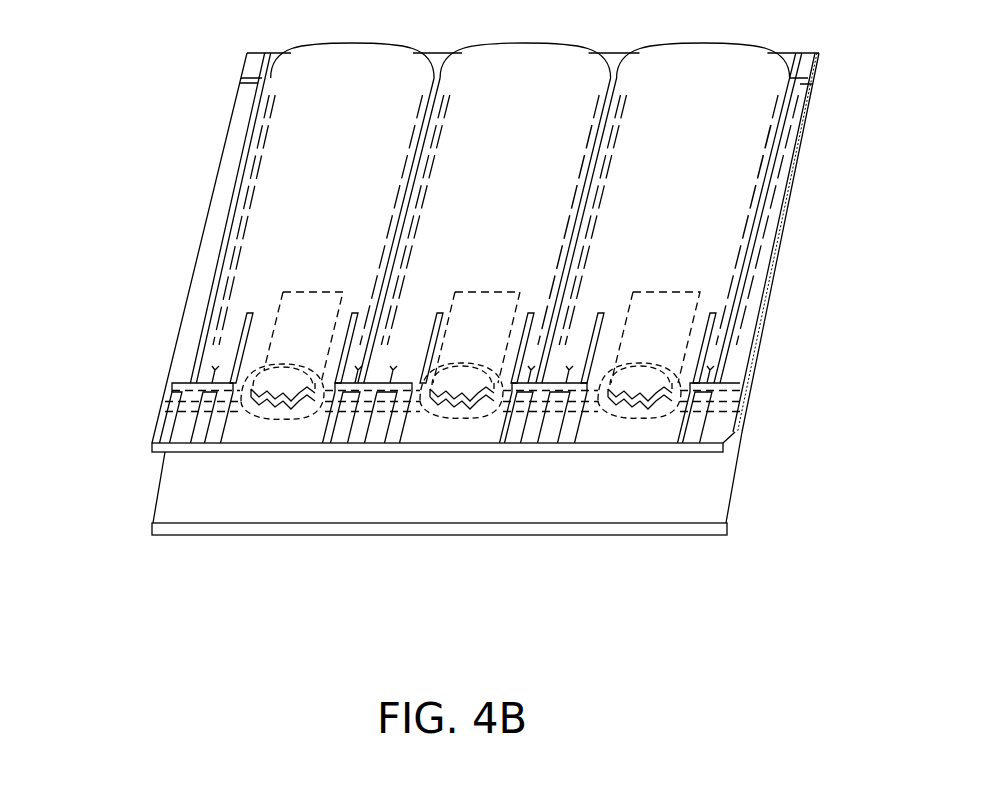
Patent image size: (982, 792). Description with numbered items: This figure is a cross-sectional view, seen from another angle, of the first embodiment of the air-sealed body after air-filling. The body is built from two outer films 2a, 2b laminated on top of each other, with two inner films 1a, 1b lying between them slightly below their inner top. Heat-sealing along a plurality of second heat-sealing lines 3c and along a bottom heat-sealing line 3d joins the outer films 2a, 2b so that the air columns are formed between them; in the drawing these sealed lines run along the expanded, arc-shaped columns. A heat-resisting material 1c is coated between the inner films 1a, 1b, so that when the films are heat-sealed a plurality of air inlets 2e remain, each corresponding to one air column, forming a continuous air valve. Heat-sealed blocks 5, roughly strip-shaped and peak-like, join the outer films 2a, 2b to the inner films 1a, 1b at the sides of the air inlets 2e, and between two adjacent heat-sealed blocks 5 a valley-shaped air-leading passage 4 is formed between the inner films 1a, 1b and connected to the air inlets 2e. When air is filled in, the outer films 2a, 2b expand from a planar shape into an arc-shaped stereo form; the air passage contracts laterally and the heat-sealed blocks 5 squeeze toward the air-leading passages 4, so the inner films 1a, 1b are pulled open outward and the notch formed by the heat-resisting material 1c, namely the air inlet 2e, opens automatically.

The inner film 1a is at (172, 390).
The inner film 1b is at (172, 406).
The heat-resisting material 1c is at (622, 410).
The outer film 2a is at (693, 448).
The outer film 2b is at (625, 538).
The air inlet 2e is at (265, 387).
The second heat-sealing line 3c is at (238, 186).
The bottom heat-sealing line 3d is at (255, 77).
The air-leading passage 4 is at (264, 432).
The heat-sealed block 5 is at (188, 412).